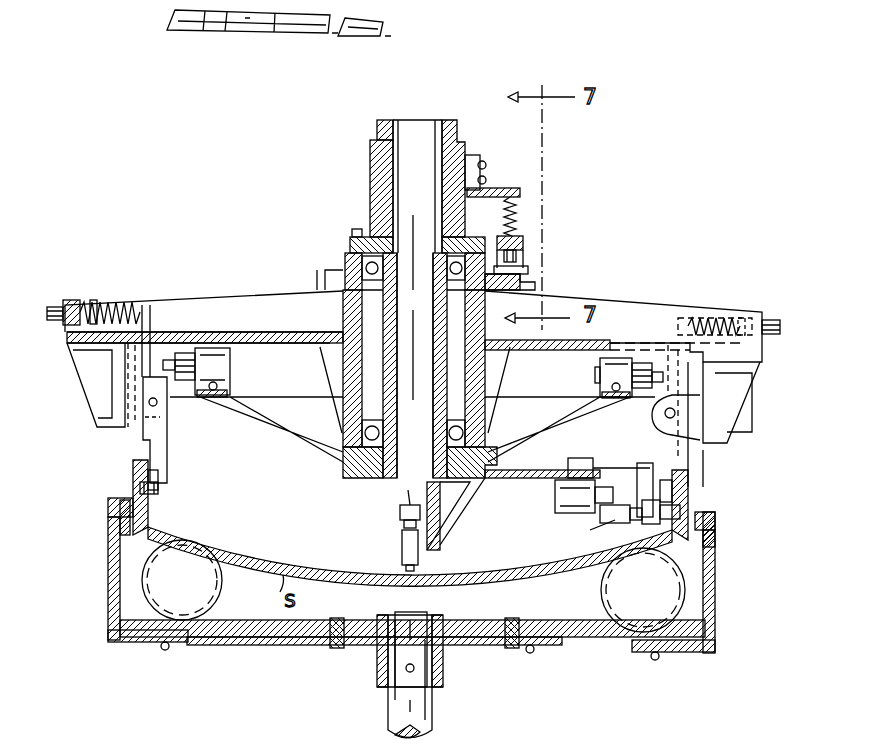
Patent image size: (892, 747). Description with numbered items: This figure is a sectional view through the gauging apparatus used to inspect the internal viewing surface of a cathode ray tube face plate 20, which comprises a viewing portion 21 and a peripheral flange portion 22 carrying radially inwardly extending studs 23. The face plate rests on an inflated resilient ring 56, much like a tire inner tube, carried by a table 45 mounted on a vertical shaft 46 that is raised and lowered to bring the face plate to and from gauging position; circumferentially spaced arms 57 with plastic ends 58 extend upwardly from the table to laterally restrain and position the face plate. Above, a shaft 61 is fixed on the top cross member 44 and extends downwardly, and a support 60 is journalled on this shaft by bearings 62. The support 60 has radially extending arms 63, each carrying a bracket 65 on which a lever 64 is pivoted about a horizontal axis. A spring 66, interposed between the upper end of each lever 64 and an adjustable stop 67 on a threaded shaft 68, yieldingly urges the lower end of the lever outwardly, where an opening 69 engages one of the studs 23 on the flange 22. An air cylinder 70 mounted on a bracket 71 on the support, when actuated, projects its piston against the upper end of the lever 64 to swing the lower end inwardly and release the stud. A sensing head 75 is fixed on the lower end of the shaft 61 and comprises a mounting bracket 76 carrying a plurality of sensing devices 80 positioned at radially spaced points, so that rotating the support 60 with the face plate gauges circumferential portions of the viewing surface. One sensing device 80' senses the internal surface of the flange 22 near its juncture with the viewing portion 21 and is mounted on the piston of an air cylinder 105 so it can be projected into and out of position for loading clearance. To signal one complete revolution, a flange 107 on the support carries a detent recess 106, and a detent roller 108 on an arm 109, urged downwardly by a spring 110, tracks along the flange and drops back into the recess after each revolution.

The cathode ray tube face plate 20 is at (140, 538).
The viewing portion 21 is at (478, 588).
The peripheral flange portion 22 is at (140, 463).
The studs 23 is at (146, 480).
The top cross member 44 is at (372, 160).
The table 45 is at (555, 650).
The vertical shaft 46 is at (432, 718).
The inflated resilient ring 56 is at (145, 598).
The arms 57 is at (108, 576).
The plastic ends 58 is at (108, 506).
The support 60 is at (284, 273).
The shaft 61 is at (393, 184).
The bearings 62 is at (352, 247).
The arms 63 is at (232, 296).
The lever 64 is at (150, 434).
The bracket 65 is at (90, 380).
The spring 66 is at (118, 302).
The adjustable stop 67 is at (95, 300).
The threaded shaft 68 is at (72, 300).
The opening 69 is at (160, 488).
The air cylinder 70 is at (222, 364).
The bracket 71 is at (270, 400).
The sensing head 75 is at (478, 505).
The mounting bracket 76 is at (445, 506).
The sensing devices 80 is at (376, 530).
The sensing device 80' is at (622, 525).
The air cylinder 105 is at (578, 495).
The detent recess 106 is at (528, 269).
The flange 107 is at (537, 285).
The detent roller 108 is at (518, 258).
The arm 109 is at (525, 240).
The spring 110 is at (522, 212).